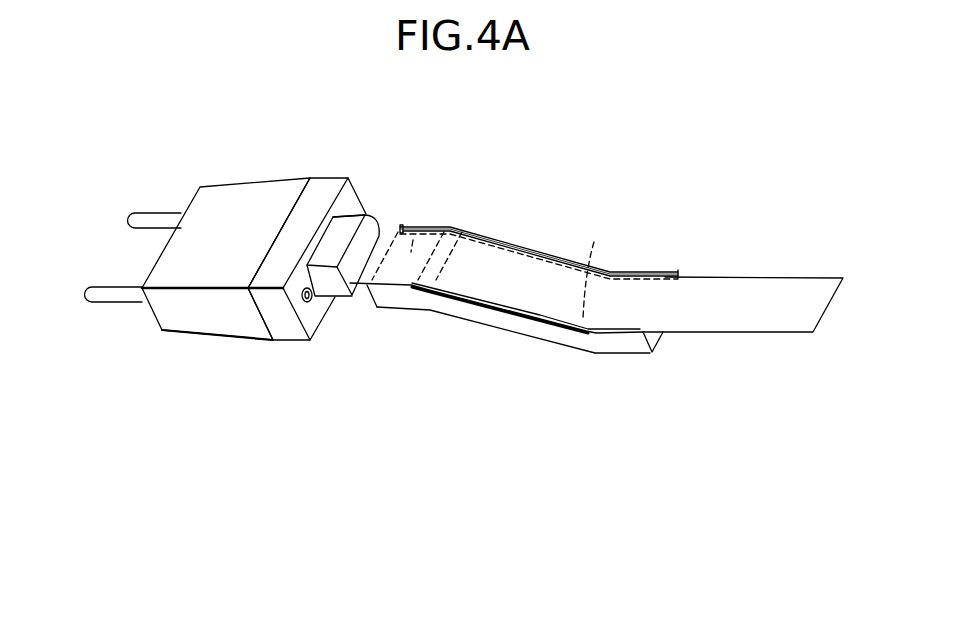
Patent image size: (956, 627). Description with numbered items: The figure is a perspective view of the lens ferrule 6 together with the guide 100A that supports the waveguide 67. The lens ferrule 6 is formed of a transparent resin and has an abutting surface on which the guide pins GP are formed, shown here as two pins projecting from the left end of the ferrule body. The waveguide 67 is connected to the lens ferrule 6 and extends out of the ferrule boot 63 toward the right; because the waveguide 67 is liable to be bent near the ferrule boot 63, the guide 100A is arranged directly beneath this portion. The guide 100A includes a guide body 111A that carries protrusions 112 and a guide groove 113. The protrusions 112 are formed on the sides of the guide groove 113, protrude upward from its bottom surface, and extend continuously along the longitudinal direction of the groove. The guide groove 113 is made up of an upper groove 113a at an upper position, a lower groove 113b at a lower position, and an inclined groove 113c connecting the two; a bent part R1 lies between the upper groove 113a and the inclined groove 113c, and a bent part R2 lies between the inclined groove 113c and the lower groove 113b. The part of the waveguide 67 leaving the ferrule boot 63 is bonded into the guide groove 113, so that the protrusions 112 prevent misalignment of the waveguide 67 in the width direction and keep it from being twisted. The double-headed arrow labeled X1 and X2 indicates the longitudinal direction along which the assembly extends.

The lens ferrule 6 is at (253, 191).
The guide pins GP is at (138, 230).
The ferrule boot 63 is at (340, 230).
The guide 100A is at (531, 271).
The guide body 111A is at (533, 341).
The protrusions 112 is at (502, 239).
The guide groove 113 is at (532, 232).
The upper groove 113a is at (413, 227).
The lower groove 113b is at (653, 327).
The inclined groove 113c is at (594, 242).
The bent part R1 is at (452, 226).
The bent part R2 is at (607, 328).
The waveguide 67 is at (730, 292).
The X1 direction X1 is at (205, 399).
The X2 direction X2 is at (205, 399).